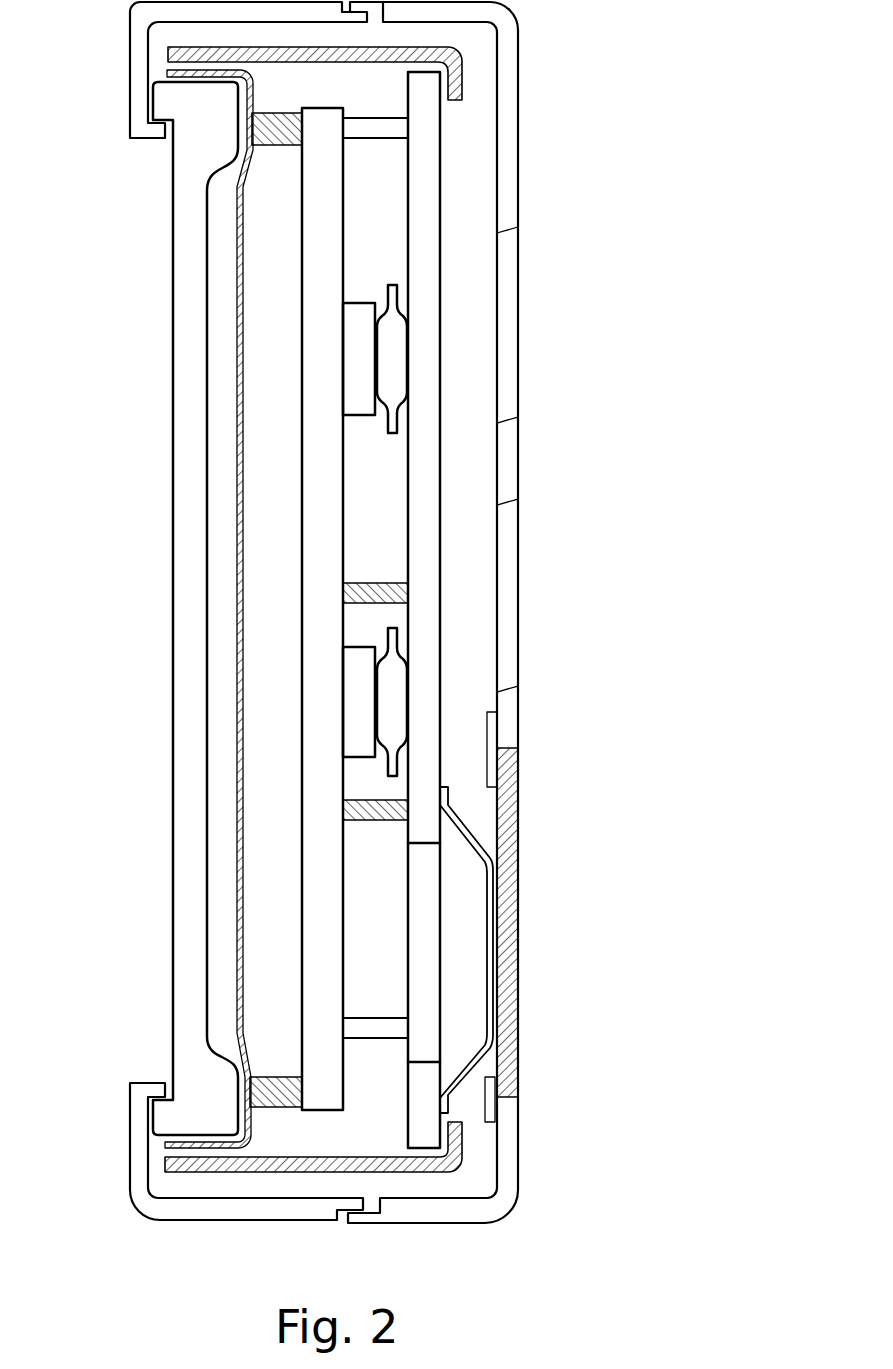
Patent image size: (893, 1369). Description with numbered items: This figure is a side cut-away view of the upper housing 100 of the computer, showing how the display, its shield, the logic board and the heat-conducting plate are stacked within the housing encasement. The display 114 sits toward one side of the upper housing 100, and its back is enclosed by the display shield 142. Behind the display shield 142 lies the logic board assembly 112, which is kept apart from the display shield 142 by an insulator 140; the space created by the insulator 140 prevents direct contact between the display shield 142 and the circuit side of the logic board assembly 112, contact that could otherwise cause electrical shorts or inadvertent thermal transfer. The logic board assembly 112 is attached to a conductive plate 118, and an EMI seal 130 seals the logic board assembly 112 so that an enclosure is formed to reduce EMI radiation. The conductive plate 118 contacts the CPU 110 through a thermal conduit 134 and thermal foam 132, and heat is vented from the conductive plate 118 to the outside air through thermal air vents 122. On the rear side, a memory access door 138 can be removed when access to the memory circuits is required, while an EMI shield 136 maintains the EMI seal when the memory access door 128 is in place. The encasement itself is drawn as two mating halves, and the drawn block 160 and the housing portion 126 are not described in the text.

The upper housing 100 is at (560, 1208).
The CPU 110 is at (357, 722).
The logic board assembly 112 is at (315, 255).
The display 114 is at (172, 815).
The conductive plate 118 is at (430, 155).
The thermal air vents 122 is at (510, 572).
The rear housing half 126 is at (437, 1225).
The memory access door 128 is at (167, 1217).
The EMI seal 130 is at (453, 65).
The thermal foam 132 is at (380, 578).
The thermal conduit 134 is at (392, 342).
The EMI shield 136 is at (463, 820).
The memory access door 138 is at (520, 935).
The insulator 140 is at (265, 1072).
The display shield 142 is at (167, 72).
The reflector block 160 is at (357, 375).